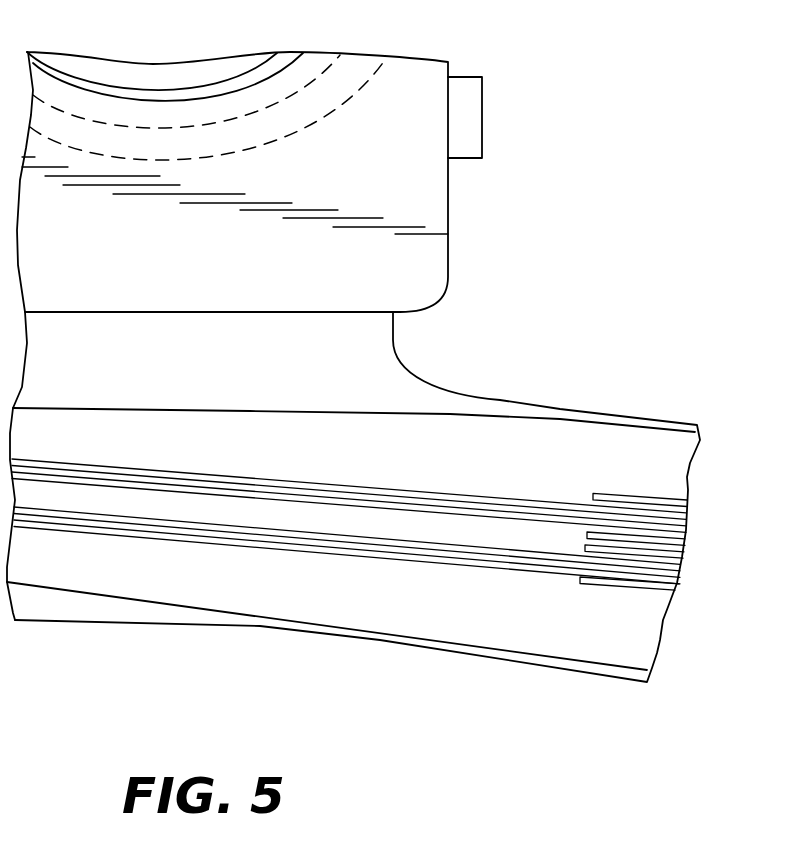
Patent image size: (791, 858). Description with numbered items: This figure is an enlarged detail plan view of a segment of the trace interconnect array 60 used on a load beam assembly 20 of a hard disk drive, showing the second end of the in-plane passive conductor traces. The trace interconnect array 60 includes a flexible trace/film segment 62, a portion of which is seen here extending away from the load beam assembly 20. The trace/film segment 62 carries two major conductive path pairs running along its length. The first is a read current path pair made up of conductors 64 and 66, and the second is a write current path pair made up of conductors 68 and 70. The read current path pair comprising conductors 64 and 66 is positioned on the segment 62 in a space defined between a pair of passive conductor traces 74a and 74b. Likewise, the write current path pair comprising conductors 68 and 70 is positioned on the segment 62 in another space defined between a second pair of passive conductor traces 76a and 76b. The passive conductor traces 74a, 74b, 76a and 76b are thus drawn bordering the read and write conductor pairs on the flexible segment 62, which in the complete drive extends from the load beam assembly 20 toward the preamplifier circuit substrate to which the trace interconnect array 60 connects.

The load beam assembly 20 is at (438, 173).
The trace interconnect array 60 is at (112, 648).
The flexible trace/film segment 62 is at (495, 680).
The read current path conductor 64 is at (420, 555).
The read current path conductor 66 is at (468, 548).
The write current path conductor 68 is at (490, 513).
The write current path conductor 70 is at (430, 497).
The passive conductor trace 74a is at (592, 582).
The passive conductor trace 74b is at (607, 545).
The passive conductor trace 76a is at (623, 535).
The passive conductor trace 76b is at (622, 535).